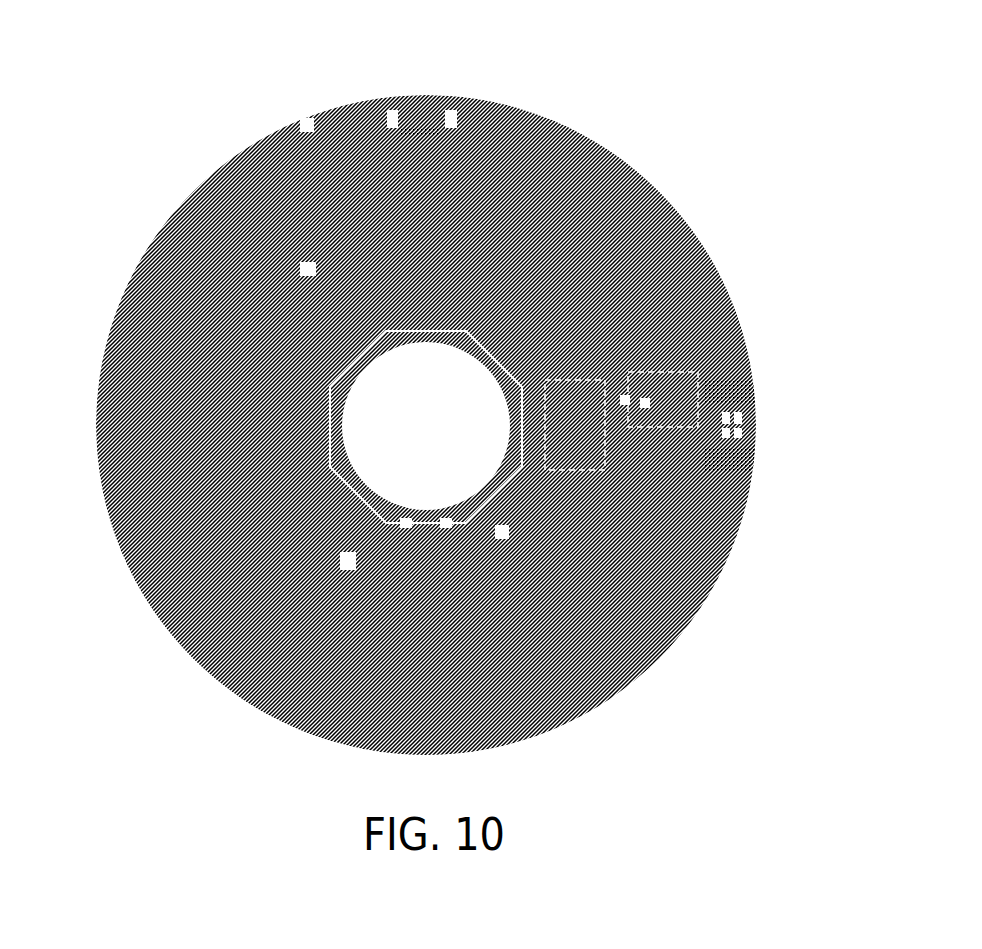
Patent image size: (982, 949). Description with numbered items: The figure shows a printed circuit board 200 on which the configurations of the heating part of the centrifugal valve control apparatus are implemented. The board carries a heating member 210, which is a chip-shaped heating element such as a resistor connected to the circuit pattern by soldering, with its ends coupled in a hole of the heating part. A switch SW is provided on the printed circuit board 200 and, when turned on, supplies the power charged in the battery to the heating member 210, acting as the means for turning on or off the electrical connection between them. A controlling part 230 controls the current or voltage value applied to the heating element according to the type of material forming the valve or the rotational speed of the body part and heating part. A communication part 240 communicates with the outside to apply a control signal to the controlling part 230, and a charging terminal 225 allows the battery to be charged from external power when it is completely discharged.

The printed circuit board 200 is at (545, 66).
The switch SW is at (307, 125).
The controlling part 230 is at (307, 272).
The communication part 240 is at (670, 372).
The charging terminal 225 is at (607, 450).
The heating member 210 is at (340, 562).